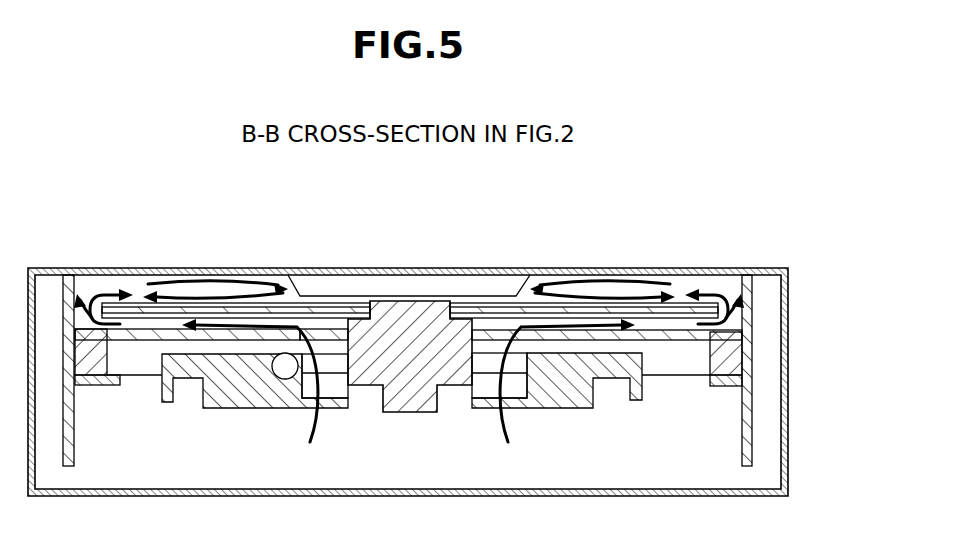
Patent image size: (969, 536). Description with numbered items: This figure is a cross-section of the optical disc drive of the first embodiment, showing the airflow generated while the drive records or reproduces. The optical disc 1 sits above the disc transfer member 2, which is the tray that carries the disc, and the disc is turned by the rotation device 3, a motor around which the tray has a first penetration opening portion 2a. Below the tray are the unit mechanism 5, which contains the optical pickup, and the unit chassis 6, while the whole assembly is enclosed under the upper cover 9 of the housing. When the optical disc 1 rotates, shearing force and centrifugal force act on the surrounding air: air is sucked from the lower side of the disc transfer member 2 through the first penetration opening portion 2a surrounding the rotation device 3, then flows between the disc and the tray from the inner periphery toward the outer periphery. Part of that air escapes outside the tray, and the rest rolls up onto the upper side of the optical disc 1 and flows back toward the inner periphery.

The optical disc 1 is at (263, 304).
The disc transfer member 2 is at (143, 332).
The first penetration opening portion 2a is at (327, 335).
The rotation device 3 is at (385, 300).
The unit mechanism 5 is at (177, 360).
The unit chassis 6 is at (753, 297).
The upper cover 9 is at (50, 270).